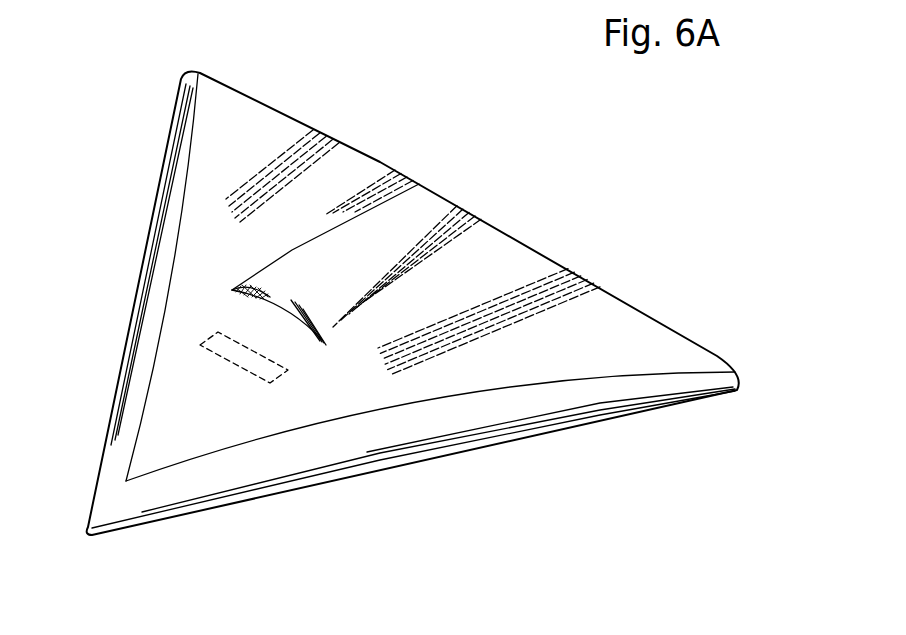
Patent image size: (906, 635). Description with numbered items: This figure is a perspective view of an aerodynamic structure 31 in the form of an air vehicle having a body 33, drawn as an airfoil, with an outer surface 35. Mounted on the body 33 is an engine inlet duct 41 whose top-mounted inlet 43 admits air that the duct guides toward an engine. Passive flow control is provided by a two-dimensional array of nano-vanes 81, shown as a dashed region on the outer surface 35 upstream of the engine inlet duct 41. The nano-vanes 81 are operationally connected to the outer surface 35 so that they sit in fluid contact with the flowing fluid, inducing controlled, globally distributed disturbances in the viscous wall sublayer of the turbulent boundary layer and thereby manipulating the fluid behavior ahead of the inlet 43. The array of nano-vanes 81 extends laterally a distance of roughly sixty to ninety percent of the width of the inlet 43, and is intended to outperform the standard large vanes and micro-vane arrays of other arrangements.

The aerodynamic structure 31 is at (632, 212).
The body 33 is at (577, 422).
The outer surface 35 is at (203, 422).
The engine inlet duct 41 is at (306, 263).
The top-mounted inlet 43 is at (293, 318).
The nano-vanes 81 is at (203, 325).